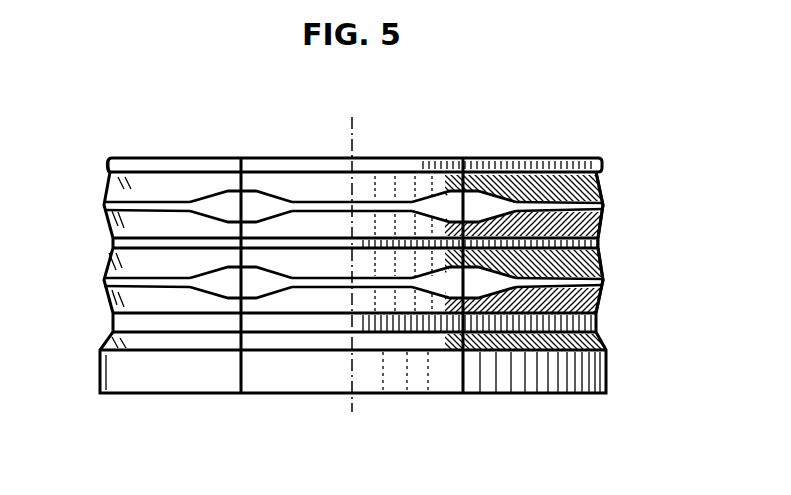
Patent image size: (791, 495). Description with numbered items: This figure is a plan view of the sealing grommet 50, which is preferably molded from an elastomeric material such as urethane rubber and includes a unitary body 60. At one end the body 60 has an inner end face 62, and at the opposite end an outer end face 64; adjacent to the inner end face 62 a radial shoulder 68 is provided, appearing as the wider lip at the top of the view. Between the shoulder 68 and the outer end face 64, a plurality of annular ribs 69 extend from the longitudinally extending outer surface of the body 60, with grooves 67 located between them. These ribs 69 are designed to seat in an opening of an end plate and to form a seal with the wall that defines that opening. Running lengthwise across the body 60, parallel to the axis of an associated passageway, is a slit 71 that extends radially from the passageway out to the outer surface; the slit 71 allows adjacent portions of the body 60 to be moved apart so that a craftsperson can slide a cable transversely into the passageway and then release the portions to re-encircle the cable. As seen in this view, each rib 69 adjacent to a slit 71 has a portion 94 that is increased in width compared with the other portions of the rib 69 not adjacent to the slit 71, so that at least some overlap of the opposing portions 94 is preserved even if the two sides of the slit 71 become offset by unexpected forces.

The sealing grommet 50 is at (225, 117).
The unitary body 60 is at (597, 303).
The inner end face 62 is at (172, 157).
The outer end face 64 is at (525, 397).
The grooves 67 is at (597, 243).
The radial shoulder 68 is at (109, 166).
The annular ribs 69 is at (598, 193).
The slit 71 is at (238, 373).
The increased-width rib portion 94 is at (446, 198).